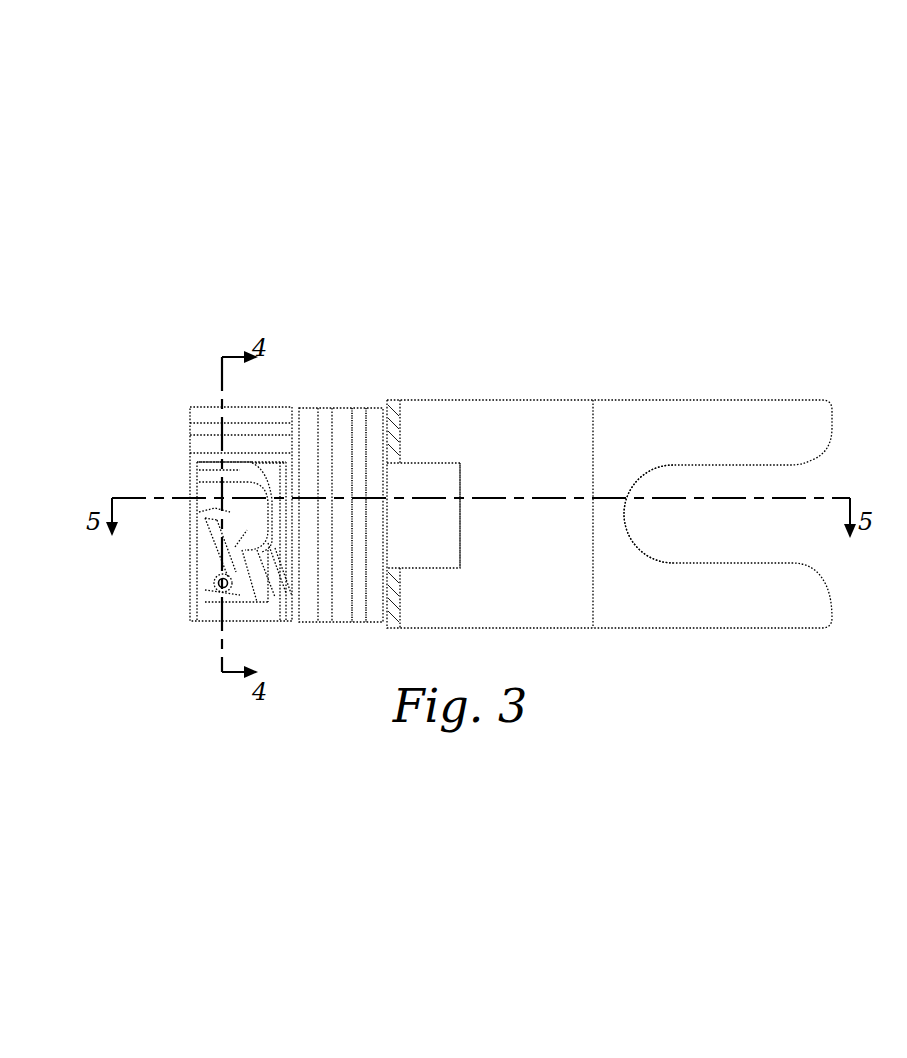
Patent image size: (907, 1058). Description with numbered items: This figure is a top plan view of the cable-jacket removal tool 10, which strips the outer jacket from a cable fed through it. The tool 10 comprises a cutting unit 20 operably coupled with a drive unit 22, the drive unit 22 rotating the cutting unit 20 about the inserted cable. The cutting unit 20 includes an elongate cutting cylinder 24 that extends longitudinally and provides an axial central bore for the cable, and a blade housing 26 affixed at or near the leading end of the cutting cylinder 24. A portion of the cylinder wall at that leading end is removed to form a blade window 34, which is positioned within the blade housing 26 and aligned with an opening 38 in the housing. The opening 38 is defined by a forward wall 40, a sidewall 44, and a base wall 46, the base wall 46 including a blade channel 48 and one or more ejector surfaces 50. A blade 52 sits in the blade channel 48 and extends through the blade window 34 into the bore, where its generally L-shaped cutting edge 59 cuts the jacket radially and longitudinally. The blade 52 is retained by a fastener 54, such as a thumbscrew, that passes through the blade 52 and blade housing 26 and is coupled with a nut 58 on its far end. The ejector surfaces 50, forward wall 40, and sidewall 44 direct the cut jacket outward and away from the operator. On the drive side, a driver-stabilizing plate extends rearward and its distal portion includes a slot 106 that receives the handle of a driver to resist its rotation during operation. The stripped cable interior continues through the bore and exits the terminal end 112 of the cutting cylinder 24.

The cable-jacket removal tool 10 is at (760, 388).
The cutting unit 20 is at (252, 388).
The drive unit 22 is at (332, 388).
The cutting cylinder 24 is at (444, 460).
The blade housing 26 is at (258, 406).
The blade window 34 is at (203, 480).
The opening 38 is at (258, 603).
The forward wall 40 is at (197, 494).
The sidewall 44 is at (208, 463).
The base wall 46 is at (258, 587).
The ejector surfaces 50 is at (280, 577).
The blade channel 48 is at (213, 603).
The blade 52 is at (204, 552).
The fastener 54 is at (213, 590).
The nut 58 is at (213, 574).
The cutting edge 59 is at (198, 512).
The slot 106 is at (702, 465).
The terminal end 112 is at (470, 497).